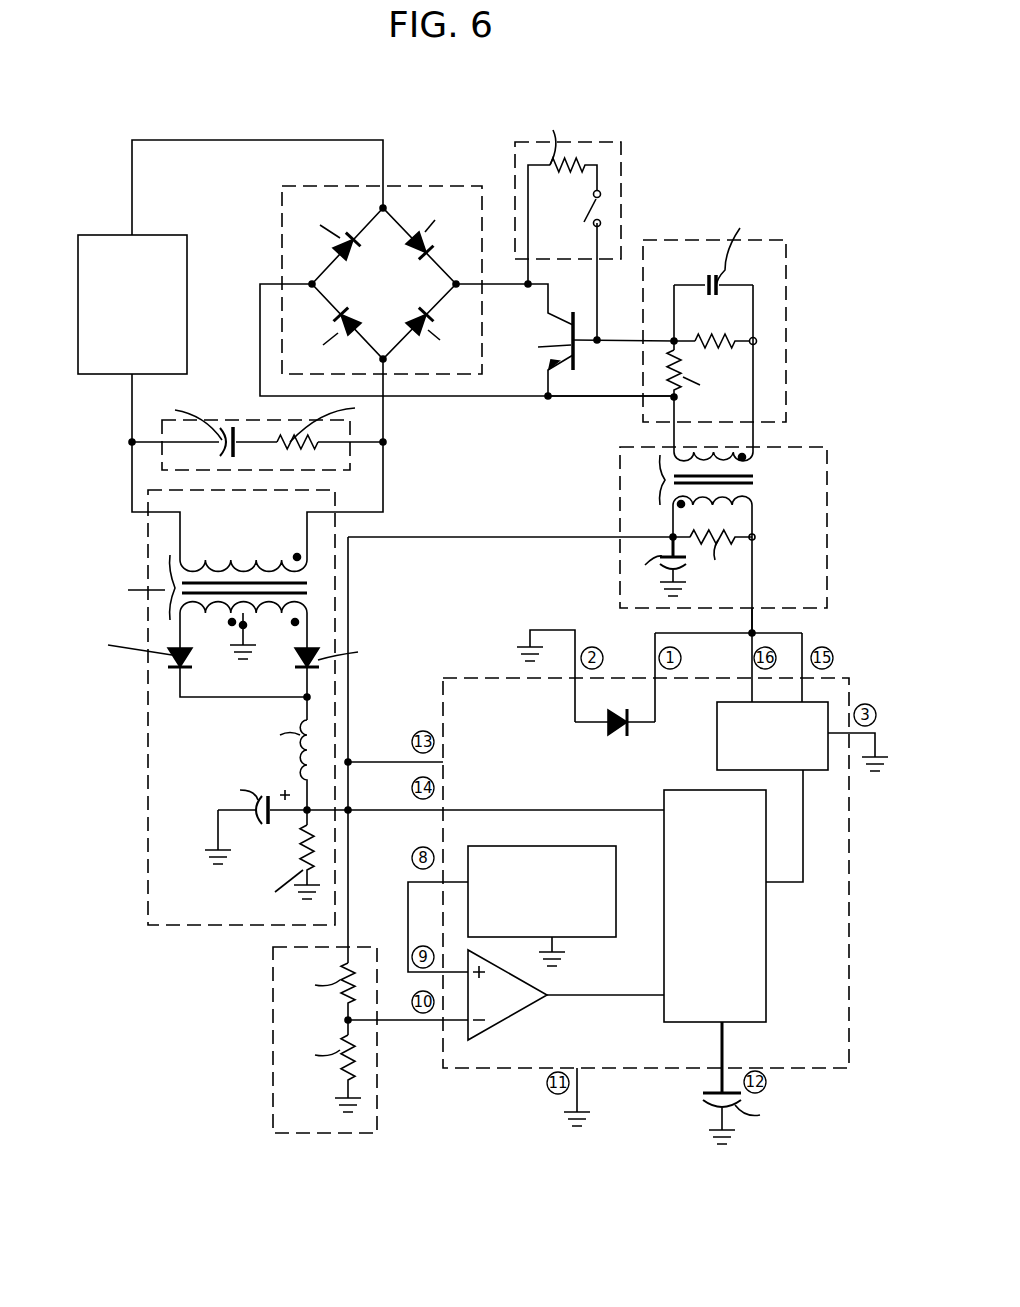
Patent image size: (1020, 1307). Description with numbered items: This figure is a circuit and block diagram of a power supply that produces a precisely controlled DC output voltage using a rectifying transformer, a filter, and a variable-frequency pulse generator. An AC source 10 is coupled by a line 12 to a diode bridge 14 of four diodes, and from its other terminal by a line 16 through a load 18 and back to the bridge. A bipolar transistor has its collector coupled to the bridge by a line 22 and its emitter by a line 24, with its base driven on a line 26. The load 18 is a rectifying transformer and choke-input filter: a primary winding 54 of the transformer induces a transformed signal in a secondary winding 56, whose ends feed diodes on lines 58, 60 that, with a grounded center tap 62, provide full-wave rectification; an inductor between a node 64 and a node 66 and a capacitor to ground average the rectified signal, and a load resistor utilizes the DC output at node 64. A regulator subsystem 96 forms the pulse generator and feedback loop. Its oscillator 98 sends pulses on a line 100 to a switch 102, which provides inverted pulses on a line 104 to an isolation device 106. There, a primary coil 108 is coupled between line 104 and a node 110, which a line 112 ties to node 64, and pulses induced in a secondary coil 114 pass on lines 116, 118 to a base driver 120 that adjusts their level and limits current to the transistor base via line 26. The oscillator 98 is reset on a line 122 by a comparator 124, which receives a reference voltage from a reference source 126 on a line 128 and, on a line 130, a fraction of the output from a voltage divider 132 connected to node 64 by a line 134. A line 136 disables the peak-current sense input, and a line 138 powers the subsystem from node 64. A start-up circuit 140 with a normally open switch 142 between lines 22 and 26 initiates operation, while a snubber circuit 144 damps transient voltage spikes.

The AC source 10 is at (132, 304).
The line 12 is at (133, 183).
The diode bridge 14 is at (435, 186).
The line 16 is at (132, 398).
The load 18 is at (148, 718).
The line 22 is at (514, 303).
The line 24 is at (515, 397).
The line 26 is at (613, 340).
The primary winding 54 is at (228, 560).
The secondary winding 56 is at (298, 620).
The line 58 is at (180, 690).
The line 60 is at (320, 690).
The grounded center tap 62 is at (240, 640).
The node 64 is at (302, 812).
The node 66 is at (315, 700).
The regulator subsystem 96 is at (849, 870).
The oscillator 98 is at (715, 906).
The line 100 is at (793, 853).
The switch 102 is at (802, 736).
The line 104 is at (752, 633).
The isolation device 106 is at (827, 520).
The primary coil 108 is at (752, 505).
The node 110 is at (673, 537).
The line 112 is at (525, 525).
The secondary coil 114 is at (755, 458).
The line 116 is at (753, 438).
The line 118 is at (674, 432).
The base driver 120 is at (786, 278).
The line 122 is at (610, 995).
The comparator 124 is at (520, 1008).
The reference source 126 is at (542, 906).
The line 128 is at (408, 895).
The line 130 is at (412, 1020).
The voltage divider 132 is at (273, 1052).
The line 134 is at (350, 845).
The line 136 is at (350, 810).
The line 138 is at (365, 752).
The start-up circuit 140 is at (605, 142).
The single-pole switch 142 is at (600, 205).
The snubber circuit 144 is at (245, 420).